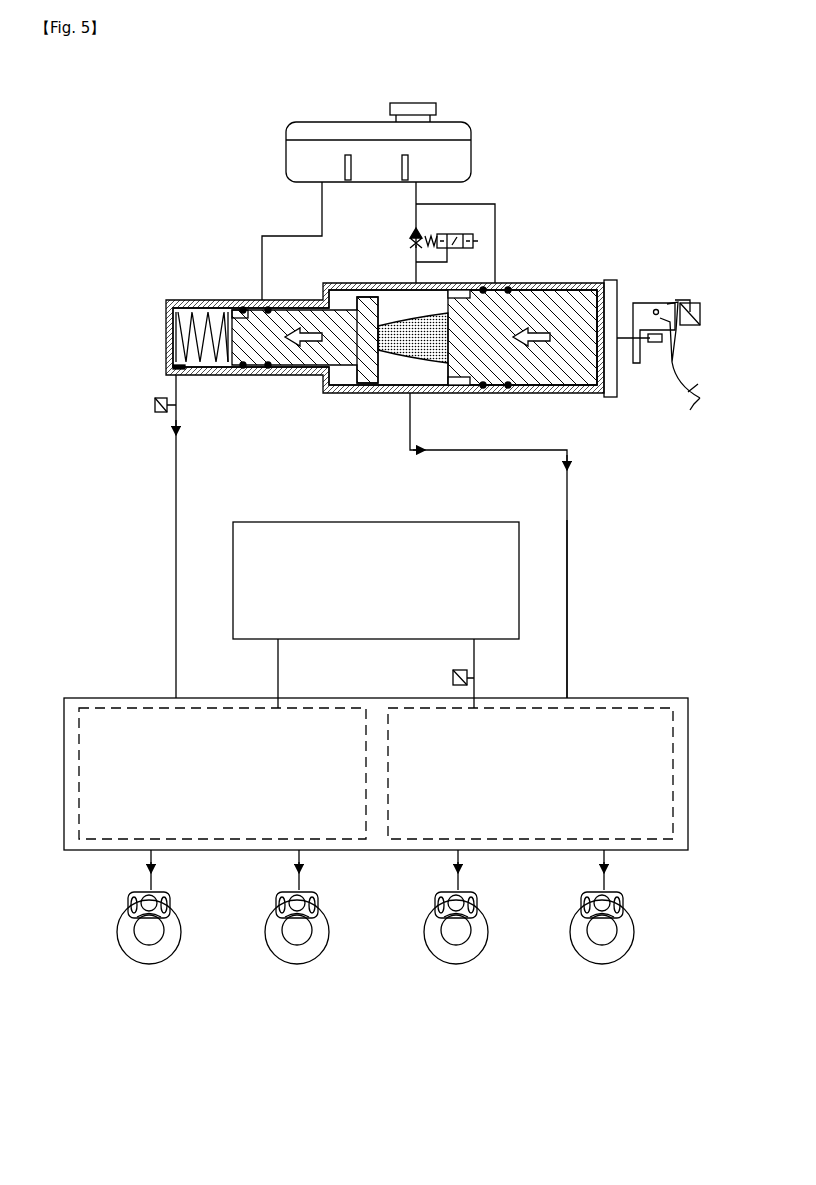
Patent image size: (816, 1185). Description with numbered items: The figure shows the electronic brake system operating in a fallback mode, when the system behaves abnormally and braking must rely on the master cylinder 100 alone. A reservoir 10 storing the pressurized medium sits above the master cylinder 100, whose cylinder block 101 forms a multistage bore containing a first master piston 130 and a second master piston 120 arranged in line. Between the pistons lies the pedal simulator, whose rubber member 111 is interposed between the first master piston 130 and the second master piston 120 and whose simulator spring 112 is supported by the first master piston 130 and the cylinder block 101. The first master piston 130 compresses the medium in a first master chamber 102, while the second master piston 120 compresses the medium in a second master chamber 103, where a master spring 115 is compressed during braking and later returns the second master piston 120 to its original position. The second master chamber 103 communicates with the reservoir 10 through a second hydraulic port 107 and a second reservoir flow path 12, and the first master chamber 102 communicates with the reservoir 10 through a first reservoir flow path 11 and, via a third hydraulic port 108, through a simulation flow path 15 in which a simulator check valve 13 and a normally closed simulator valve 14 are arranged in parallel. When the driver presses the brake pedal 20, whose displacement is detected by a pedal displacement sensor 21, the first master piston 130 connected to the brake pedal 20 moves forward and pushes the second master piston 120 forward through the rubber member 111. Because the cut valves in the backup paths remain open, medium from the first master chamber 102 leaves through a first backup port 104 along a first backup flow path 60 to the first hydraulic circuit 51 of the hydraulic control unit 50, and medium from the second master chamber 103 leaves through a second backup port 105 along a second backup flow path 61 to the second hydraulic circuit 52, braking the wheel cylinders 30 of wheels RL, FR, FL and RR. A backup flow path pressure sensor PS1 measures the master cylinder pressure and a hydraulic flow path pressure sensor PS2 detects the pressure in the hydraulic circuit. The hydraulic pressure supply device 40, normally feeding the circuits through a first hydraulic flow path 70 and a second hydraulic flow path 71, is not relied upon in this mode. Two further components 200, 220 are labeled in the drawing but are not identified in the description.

The reservoir 10 is at (471, 143).
The first reservoir flow path 11 is at (495, 226).
The second reservoir flow path 12 is at (322, 212).
The simulator check valve 13 is at (410, 234).
The simulator valve 14 is at (460, 234).
The simulation flow path 15 is at (447, 262).
The brake pedal 20 is at (673, 357).
The pedal displacement sensor 21 is at (700, 316).
The wheel cylinders 30 is at (607, 893).
The hydraulic pressure supply device 40 is at (375, 522).
The hydraulic control unit 50 is at (650, 698).
The first hydraulic circuit 51 is at (604, 708).
The second hydraulic circuit 52 is at (90, 708).
The first backup flow path 60 is at (567, 518).
The second backup flow path 61 is at (175, 500).
The first hydraulic flow path 70 is at (474, 650).
The second hydraulic flow path 71 is at (278, 664).
The master cylinder 100 is at (151, 298).
The cylinder block 101 is at (170, 314).
The first master chamber 102 is at (412, 410).
The second master chamber 103 is at (182, 342).
The first backup port 104 is at (400, 394).
The second backup port 105 is at (180, 376).
The second hydraulic port 107 is at (250, 300).
The third hydraulic port 108 is at (414, 282).
The rubber member 111 is at (440, 386).
The simulator spring 112 is at (614, 270).
The master spring 115 is at (212, 310).
The second master piston 120 is at (352, 290).
The first master piston 130 is at (545, 290).
The first sealing member 200 is at (254, 359).
The second sealing member 220 is at (364, 358).
The backup flow path pressure sensor PS1 is at (150, 406).
The hydraulic flow path pressure sensor PS2 is at (447, 679).